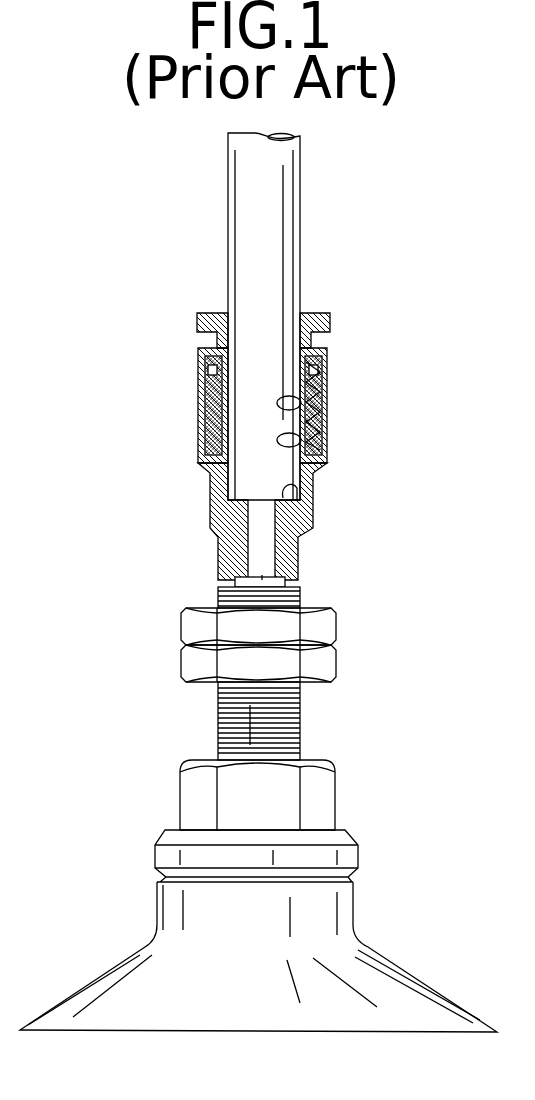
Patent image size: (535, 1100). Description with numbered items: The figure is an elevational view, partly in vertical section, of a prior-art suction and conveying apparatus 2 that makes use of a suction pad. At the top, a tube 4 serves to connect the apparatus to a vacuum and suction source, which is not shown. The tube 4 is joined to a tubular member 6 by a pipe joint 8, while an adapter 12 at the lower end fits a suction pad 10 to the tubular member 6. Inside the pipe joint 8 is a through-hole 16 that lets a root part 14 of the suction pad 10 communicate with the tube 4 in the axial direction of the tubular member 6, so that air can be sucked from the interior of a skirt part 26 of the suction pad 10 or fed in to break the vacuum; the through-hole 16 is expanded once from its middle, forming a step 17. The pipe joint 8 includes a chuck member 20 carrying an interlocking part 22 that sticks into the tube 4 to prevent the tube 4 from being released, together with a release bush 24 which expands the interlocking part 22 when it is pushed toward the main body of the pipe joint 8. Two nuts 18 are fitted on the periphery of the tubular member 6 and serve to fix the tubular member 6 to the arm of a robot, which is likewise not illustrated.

The suction and conveying apparatus 2 is at (116, 453).
The tube 4 is at (225, 222).
The tubular member 6 is at (213, 727).
The pipe joint 8 is at (195, 413).
The suction pad 10 is at (101, 961).
The adapter 12 is at (151, 840).
The root part 14 is at (272, 918).
The through-hole 16 is at (300, 553).
The step 17 is at (297, 490).
The nuts 18 is at (190, 633).
The chuck member 20 is at (300, 404).
The interlocking part 22 is at (300, 444).
The release bush 24 is at (313, 318).
The skirt part 26 is at (430, 1022).